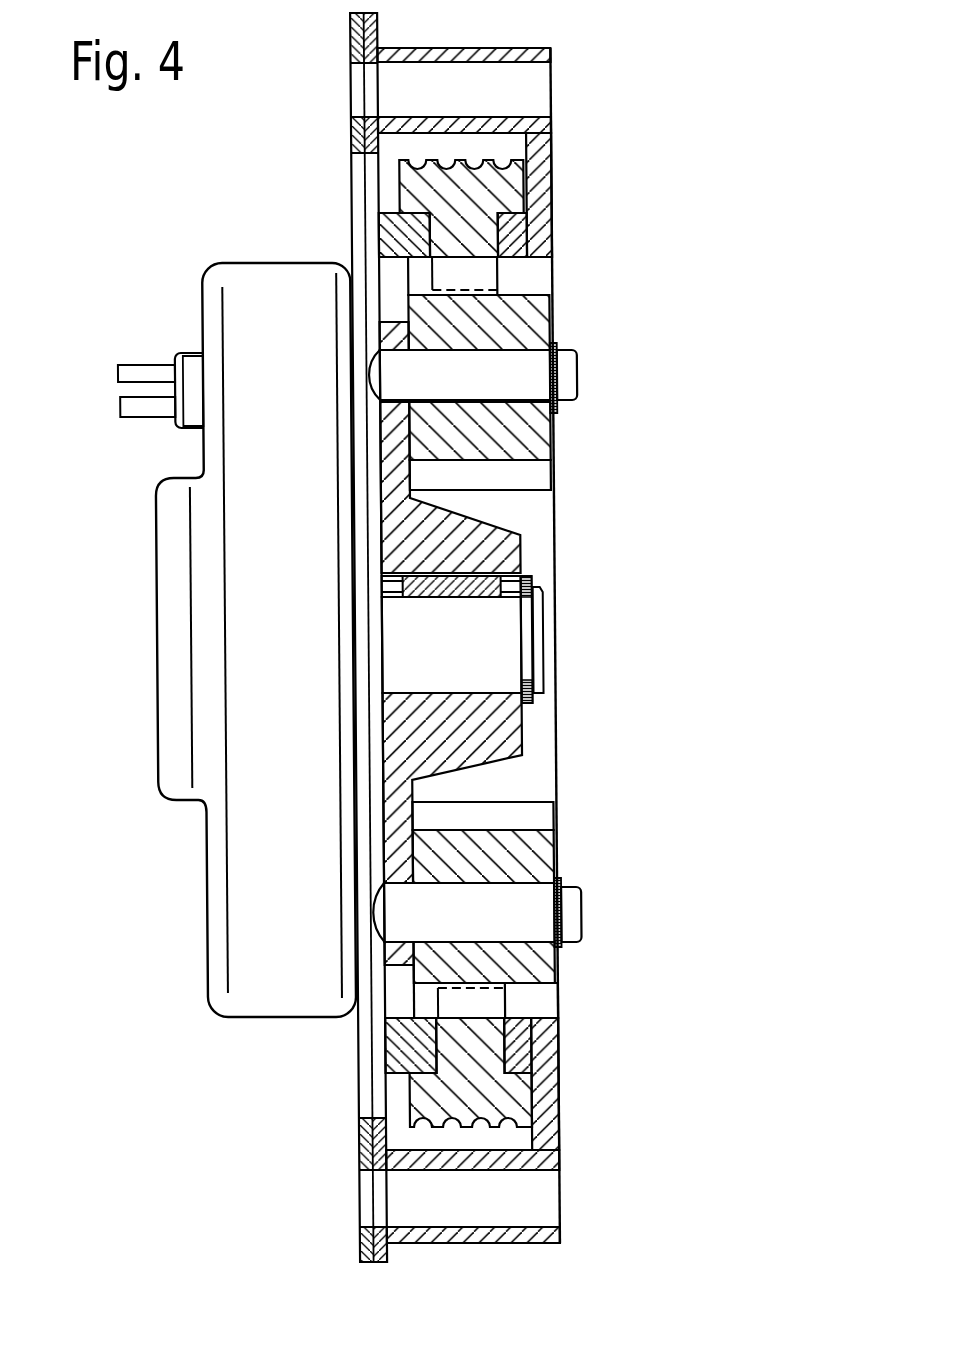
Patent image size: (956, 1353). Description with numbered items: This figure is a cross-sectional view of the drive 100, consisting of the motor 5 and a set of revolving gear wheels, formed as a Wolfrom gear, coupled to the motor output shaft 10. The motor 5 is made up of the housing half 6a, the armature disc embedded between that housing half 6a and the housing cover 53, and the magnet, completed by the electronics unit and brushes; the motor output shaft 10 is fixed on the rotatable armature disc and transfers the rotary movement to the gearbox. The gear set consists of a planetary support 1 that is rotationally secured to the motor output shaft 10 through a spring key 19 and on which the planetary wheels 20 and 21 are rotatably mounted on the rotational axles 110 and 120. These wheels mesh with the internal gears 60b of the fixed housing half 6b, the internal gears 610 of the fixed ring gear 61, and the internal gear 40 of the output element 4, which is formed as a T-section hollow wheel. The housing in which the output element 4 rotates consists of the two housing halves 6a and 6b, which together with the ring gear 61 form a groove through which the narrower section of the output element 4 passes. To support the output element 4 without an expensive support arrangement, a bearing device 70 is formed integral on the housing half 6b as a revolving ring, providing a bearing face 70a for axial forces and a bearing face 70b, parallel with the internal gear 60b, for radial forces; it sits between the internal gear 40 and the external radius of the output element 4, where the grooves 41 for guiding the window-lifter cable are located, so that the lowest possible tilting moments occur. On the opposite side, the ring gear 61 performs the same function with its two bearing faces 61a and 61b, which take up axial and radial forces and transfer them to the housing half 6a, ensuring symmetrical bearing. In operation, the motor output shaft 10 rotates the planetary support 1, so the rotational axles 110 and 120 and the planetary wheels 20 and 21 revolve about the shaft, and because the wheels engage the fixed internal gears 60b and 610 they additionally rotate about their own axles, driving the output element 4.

The drive 100 is at (614, 70).
The planetary support 1 is at (453, 545).
The motor output shaft 10 is at (490, 645).
The spring key 19 is at (505, 580).
The planetary wheel 20 is at (531, 433).
The planetary wheel 21 is at (520, 857).
The output element 4 is at (512, 195).
The grooves 41 is at (517, 1123).
The internal gear 40 is at (477, 276).
The motor 5 is at (263, 478).
The housing half 6a is at (255, 290).
The housing half 6b is at (540, 143).
The ring gear 61 is at (402, 230).
The bearing face 61a is at (425, 239).
The bearing face 61b is at (378, 213).
The internal gears 610 is at (427, 1007).
The internal gears 60b is at (535, 1003).
The bearing device 70 is at (502, 243).
The bearing face 70a is at (520, 257).
The bearing face 70b is at (500, 213).
The rotational axle 110 is at (565, 375).
The rotational axle 120 is at (563, 923).
The housing cover 53 is at (362, 1247).